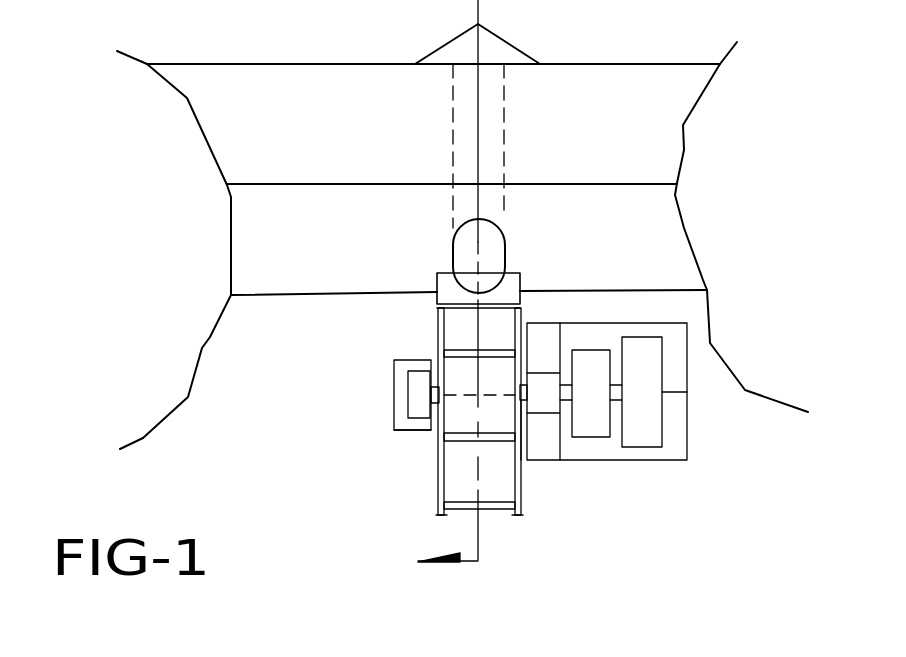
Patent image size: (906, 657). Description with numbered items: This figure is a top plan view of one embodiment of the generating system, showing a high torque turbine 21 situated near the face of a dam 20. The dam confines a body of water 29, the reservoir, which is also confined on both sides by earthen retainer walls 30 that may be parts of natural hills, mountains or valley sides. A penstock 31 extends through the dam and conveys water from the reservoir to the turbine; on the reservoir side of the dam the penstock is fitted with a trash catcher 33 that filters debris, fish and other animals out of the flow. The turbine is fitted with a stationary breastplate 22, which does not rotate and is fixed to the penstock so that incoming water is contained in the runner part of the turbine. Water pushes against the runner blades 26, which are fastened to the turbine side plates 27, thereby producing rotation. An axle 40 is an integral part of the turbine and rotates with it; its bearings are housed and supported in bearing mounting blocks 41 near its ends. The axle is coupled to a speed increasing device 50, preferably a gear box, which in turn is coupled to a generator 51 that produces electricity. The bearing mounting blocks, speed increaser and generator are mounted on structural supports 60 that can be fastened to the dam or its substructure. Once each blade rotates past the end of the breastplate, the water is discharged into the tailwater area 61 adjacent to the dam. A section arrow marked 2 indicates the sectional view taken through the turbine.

The section line for FIG. 2 is at (436, 562).
The dam 20 is at (619, 256).
The high torque turbine 21 is at (492, 495).
The breastplate 22 is at (437, 302).
The runner blades 26 is at (472, 438).
The turbine side plates 27 is at (522, 327).
The body of water 29 is at (631, 39).
The earthen retainer walls 30 is at (129, 281).
The penstock 31 is at (500, 193).
The trash catcher 33 is at (497, 33).
The axle 40 is at (522, 400).
The bearing mounting blocks 41 is at (415, 398).
The speed increasing device 50 is at (590, 420).
The generator 51 is at (640, 445).
The structural supports 60 is at (398, 368).
The tailwater area 61 is at (351, 469).